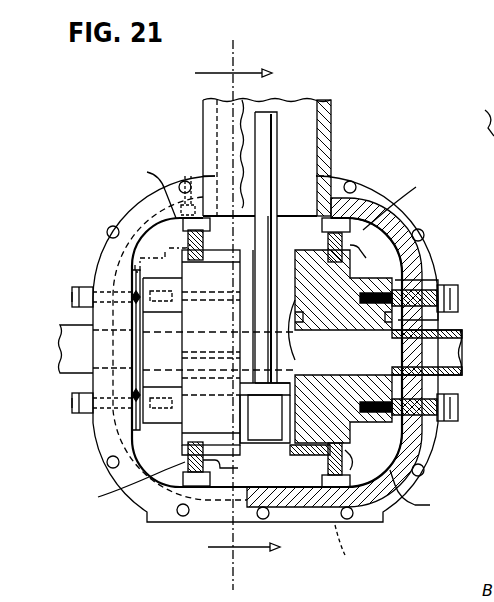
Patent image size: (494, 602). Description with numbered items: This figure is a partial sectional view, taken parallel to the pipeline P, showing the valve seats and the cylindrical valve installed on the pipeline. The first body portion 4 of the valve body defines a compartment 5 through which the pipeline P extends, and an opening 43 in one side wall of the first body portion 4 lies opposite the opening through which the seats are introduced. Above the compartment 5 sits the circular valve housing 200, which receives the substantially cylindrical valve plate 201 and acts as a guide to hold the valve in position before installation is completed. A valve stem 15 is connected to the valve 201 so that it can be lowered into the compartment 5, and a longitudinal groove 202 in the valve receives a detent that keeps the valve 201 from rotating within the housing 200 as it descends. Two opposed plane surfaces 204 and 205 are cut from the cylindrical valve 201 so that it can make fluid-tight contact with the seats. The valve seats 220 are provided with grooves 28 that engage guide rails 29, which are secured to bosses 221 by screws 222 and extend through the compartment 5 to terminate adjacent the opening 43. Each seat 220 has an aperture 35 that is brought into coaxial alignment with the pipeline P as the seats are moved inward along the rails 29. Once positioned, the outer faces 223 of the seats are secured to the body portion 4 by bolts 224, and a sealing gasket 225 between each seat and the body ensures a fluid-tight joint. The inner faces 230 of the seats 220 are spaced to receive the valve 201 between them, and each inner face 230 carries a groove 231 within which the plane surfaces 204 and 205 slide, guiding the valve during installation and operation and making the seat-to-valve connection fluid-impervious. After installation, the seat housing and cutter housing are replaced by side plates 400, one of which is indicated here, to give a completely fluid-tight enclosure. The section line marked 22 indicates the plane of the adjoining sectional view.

The first body portion 4 is at (364, 205).
The opening 43 is at (132, 192).
The compartment 5 is at (274, 425).
The valve stem 15 is at (270, 170).
The section line 22 is at (237, 315).
The grooves 28 is at (204, 255).
The guide rails 29 is at (170, 248).
The aperture 35 is at (338, 372).
The circular valve housing 200 is at (325, 135).
The cylindrical valve plate 201 is at (252, 318).
The longitudinal groove 202 is at (265, 293).
The plane surface 204 is at (240, 353).
The plane surface 205 is at (291, 335).
The valve seats 220 is at (218, 396).
The bosses 221 is at (262, 337).
The screws 222 is at (192, 178).
The outer faces 223 is at (136, 338).
The bolts 224 is at (82, 285).
The sealing gasket 225 is at (392, 330).
The inner faces 230 is at (243, 252).
The groove 231 is at (240, 405).
The side plates 400 is at (479, 112).
The pipeline P is at (62, 320).